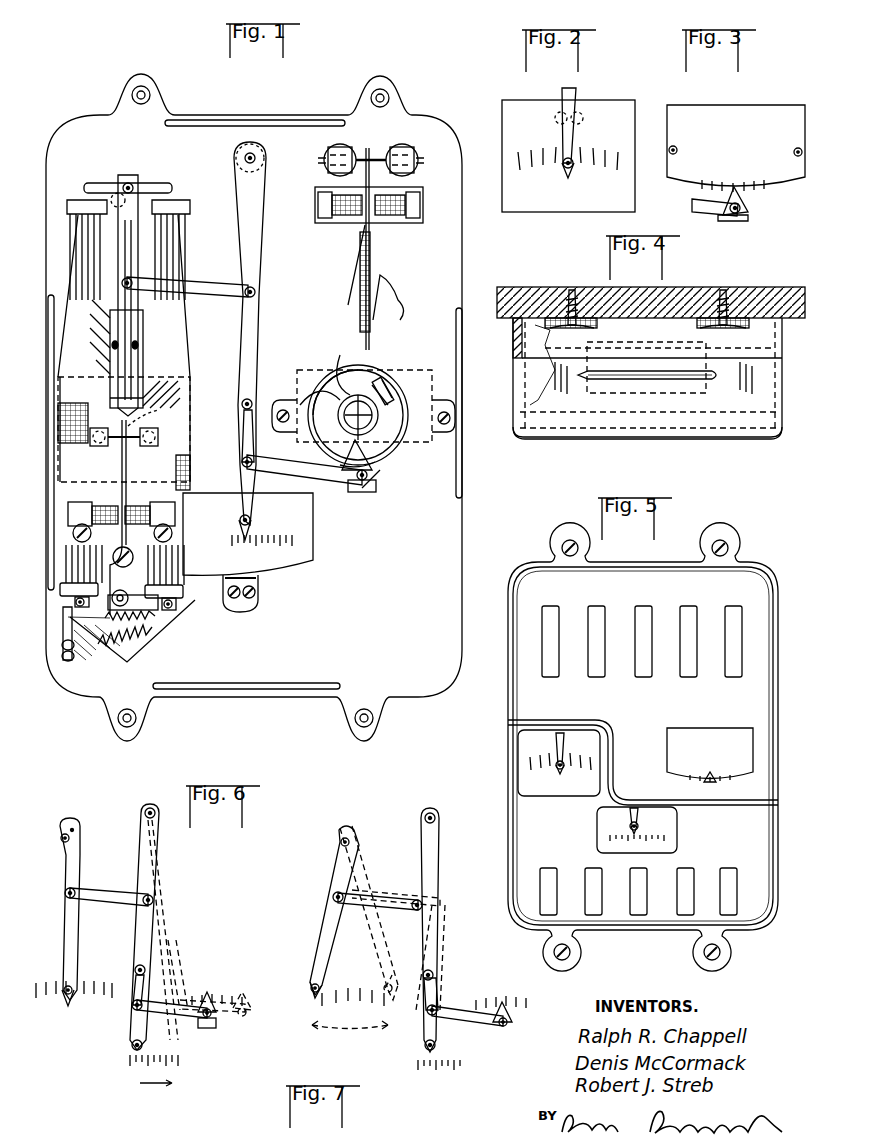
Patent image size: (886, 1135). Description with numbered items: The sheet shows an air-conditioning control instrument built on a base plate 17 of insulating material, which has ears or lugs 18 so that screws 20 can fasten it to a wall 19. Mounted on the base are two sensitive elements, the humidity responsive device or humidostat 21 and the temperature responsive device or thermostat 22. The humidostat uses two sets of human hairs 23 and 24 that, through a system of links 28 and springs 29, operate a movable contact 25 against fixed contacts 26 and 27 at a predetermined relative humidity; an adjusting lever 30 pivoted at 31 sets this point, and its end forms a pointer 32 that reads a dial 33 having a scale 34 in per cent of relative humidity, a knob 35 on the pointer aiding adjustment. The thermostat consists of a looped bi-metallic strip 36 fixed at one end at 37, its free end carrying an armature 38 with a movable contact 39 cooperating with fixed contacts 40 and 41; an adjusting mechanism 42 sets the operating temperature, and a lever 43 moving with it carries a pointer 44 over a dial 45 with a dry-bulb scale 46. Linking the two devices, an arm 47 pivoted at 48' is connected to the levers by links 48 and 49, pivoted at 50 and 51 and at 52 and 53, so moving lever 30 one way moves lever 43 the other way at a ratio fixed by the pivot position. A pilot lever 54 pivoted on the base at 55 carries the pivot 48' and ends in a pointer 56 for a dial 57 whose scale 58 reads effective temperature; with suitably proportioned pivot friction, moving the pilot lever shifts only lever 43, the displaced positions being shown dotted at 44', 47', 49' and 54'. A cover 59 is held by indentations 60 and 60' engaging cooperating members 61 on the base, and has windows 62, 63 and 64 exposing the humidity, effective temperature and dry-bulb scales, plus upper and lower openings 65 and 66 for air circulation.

In FIG. 1, the base plate 17 is at (440, 140).
In FIG. 4, the base plate 17 is at (784, 341).
In FIG. 1, the ears or lugs 18 is at (157, 95).
In FIG. 4, the ears or lugs 18 is at (568, 322).
In FIG. 4, the wall 19 is at (508, 318).
In FIG. 4, the screws 20 is at (572, 302).
In FIG. 1, the humidity responsive device 21 is at (124, 352).
In FIG. 1, the temperature responsive device 22 is at (354, 391).
In FIG. 1, the set of human hairs 23 is at (70, 222).
In FIG. 1, the set of human hairs 24 is at (186, 228).
In FIG. 1, the movable contact 25 is at (128, 468).
In FIG. 1, the fixed contact 26 is at (98, 448).
In FIG. 1, the fixed contact 27 is at (158, 434).
In FIG. 1, the links 28 is at (137, 594).
In FIG. 1, the springs 29 is at (132, 638).
In FIG. 1, the adjusting lever 30 is at (138, 303).
In FIG. 6, the adjusting lever 30 is at (78, 864).
In FIG. 7, the adjusting lever 30 is at (330, 945).
In FIG. 1, the pivot 31 is at (127, 182).
In FIG. 6, the pivot 31 is at (60, 843).
In FIG. 1, the pointer 32 is at (152, 417).
In FIG. 2, the pointer 32 is at (575, 158).
In FIG. 5, the pointer 32 is at (565, 760).
In FIG. 6, the pointer 32 is at (64, 1008).
In FIG. 7, the pointer 32 is at (310, 990).
In FIG. 1, the dial 33 is at (190, 458).
In FIG. 2, the dial 33 is at (622, 112).
In FIG. 2, the scale 34 is at (518, 165).
In FIG. 6, the scale 34 is at (35, 990).
In FIG. 2, the knob 35 is at (562, 158).
In FIG. 1, the bi-metallic strip 36 is at (385, 470).
In FIG. 1, the fixed end 37 is at (398, 382).
In FIG. 1, the armature 38 is at (352, 300).
In FIG. 1, the movable contact 39 is at (371, 150).
In FIG. 1, the fixed contact 40 is at (362, 148).
In FIG. 1, the fixed contact 41 is at (376, 168).
In FIG. 1, the adjusting mechanism 42 is at (358, 408).
In FIG. 1, the lever 43 is at (380, 490).
In FIG. 3, the lever 43 is at (738, 221).
In FIG. 1, the pointer 44 is at (389, 455).
In FIG. 3, the pointer 44 is at (753, 201).
In FIG. 5, the pointer 44 is at (735, 785).
In FIG. 6, the pointer 44 is at (217, 1026).
In FIG. 7, the pointer 44 is at (501, 1022).
In FIG. 6, the new position of pointer 44' is at (257, 1006).
In FIG. 7, the new position of pointer 44' is at (331, 996).
In FIG. 1, the dial 45 is at (297, 382).
In FIG. 3, the dial 45 is at (768, 114).
In FIG. 3, the scale 46 is at (790, 184).
In FIG. 6, the scale 46 is at (242, 996).
In FIG. 1, the arm 47 is at (265, 394).
In FIG. 6, the arm 47 is at (171, 973).
In FIG. 6, the new position of arm 47' is at (193, 964).
In FIG. 1, the link 48 is at (187, 273).
In FIG. 6, the link 48 is at (109, 906).
In FIG. 1, the pivot 48' is at (232, 392).
In FIG. 6, the pivot 48' is at (128, 960).
In FIG. 1, the link 49 is at (304, 482).
In FIG. 6, the link 49 is at (172, 1025).
In FIG. 6, the new position of link 49' is at (224, 1027).
In FIG. 1, the pivot 50 is at (127, 278).
In FIG. 6, the pivot 50 is at (64, 894).
In FIG. 1, the pivot 51 is at (260, 290).
In FIG. 6, the pivot 51 is at (156, 897).
In FIG. 1, the pivot 52 is at (256, 460).
In FIG. 6, the pivot 52 is at (132, 1008).
In FIG. 1, the pivot 53 is at (362, 493).
In FIG. 6, the pivot 53 is at (208, 1030).
In FIG. 1, the pilot lever 54 is at (262, 333).
In FIG. 6, the pilot lever 54 is at (162, 927).
In FIG. 7, the pilot lever 54 is at (418, 944).
In FIG. 6, the new position of pilot lever 54' is at (187, 930).
In FIG. 1, the pivot 55 is at (245, 150).
In FIG. 6, the pivot 55 is at (150, 806).
In FIG. 1, the pointer 56 is at (254, 520).
In FIG. 5, the pointer 56 is at (640, 827).
In FIG. 6, the pointer 56 is at (130, 1046).
In FIG. 1, the dial 57 is at (314, 521).
In FIG. 1, the scale 58 is at (230, 540).
In FIG. 6, the scale 58 is at (130, 1060).
In FIG. 4, the cover 59 is at (750, 439).
In FIG. 5, the cover 59 is at (770, 617).
In FIG. 4, the indentations 60 is at (598, 367).
In FIG. 4, the indentation 60' is at (687, 378).
In FIG. 1, the cooperating members 61 is at (290, 120).
In FIG. 4, the cooperating members 61 is at (512, 385).
In FIG. 5, the window 62 is at (612, 733).
In FIG. 5, the window 63 is at (678, 852).
In FIG. 5, the window 64 is at (722, 727).
In FIG. 5, the openings 65 is at (690, 612).
In FIG. 5, the openings 66 is at (630, 882).